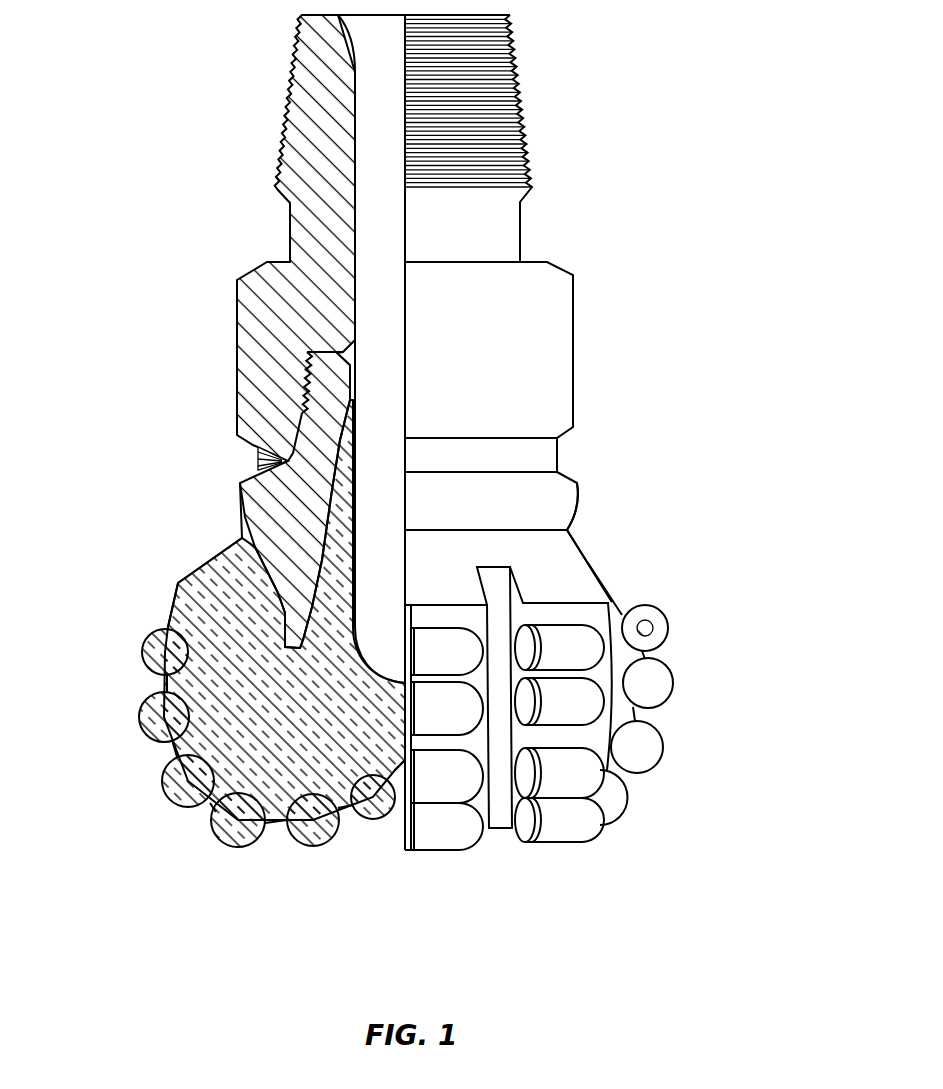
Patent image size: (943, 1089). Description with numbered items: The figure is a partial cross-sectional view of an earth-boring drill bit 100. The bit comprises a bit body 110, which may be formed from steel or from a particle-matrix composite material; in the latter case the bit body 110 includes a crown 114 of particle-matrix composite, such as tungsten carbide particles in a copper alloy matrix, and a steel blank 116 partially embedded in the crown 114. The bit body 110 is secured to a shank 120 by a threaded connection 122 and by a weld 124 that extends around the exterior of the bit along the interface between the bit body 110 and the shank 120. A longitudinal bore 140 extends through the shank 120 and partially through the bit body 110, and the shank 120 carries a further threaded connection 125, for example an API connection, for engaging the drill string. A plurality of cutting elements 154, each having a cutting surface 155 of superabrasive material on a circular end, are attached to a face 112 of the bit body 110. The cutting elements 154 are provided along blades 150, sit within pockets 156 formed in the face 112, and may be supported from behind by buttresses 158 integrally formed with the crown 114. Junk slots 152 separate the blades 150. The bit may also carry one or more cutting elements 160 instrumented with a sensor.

The earth-boring drill bit 100 is at (158, 148).
The bit body 110 is at (145, 452).
The face 112 is at (177, 752).
The crown 114 is at (223, 570).
The steel blank 116 is at (257, 507).
The shank 120 is at (257, 344).
The threaded connection 122 is at (283, 377).
The weld 124 is at (263, 462).
The threaded connection 125 is at (283, 112).
The longitudinal bore 140 is at (378, 272).
The blades 150 is at (597, 578).
The junk slots 152 is at (500, 832).
The cutting elements 154 is at (177, 783).
The cutting surface 155 is at (527, 842).
The pockets 156 is at (167, 680).
The buttresses 158 is at (597, 832).
The cutting elements instrumented with a sensor 160 is at (670, 628).